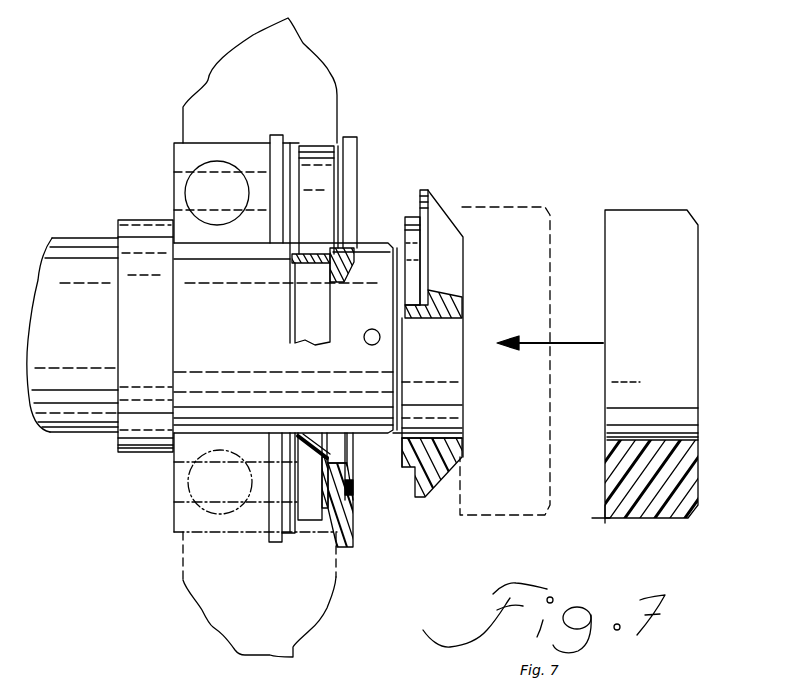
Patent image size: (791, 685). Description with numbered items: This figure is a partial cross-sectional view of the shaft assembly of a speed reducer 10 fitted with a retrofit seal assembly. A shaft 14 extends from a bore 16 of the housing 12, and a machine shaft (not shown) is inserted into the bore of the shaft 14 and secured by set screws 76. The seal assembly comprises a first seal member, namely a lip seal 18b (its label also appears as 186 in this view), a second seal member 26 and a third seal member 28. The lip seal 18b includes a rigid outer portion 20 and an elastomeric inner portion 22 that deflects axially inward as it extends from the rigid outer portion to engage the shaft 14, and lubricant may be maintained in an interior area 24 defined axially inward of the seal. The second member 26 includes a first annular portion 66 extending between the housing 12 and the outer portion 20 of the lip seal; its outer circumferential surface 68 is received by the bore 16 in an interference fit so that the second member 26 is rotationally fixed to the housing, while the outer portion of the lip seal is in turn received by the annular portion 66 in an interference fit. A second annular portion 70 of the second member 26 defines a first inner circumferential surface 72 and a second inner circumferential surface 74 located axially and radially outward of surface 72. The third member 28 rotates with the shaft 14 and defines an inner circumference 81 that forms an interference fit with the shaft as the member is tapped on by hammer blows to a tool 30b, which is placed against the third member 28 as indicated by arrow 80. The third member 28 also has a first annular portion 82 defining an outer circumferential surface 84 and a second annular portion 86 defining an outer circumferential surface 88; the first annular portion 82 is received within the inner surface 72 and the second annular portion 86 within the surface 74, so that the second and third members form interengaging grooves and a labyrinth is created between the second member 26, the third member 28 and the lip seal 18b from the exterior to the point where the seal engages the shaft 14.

The speed reducer 10 is at (148, 85).
The housing 12 is at (317, 58).
The shaft 14 is at (88, 443).
The bore 16 is at (261, 143).
The first seal member 18b is at (259, 594).
The rigid outer portion 20 is at (310, 528).
The elastomeric inner portion 22 is at (315, 452).
The interior area 24 is at (140, 512).
The second seal member 26 is at (352, 146).
The third seal member 28 is at (432, 195).
The tool 30b is at (497, 207).
The first annular portion 66 is at (292, 270).
The outer circumferential surface 68 is at (313, 142).
The second annular portion 70 is at (352, 527).
The first inner circumferential surface 72 is at (325, 450).
The second inner circumferential surface 74 is at (355, 482).
The set screws 76 is at (365, 345).
The arrow 80 is at (563, 340).
The inner circumference 81 is at (433, 437).
The first annular portion 82 is at (420, 318).
The outer circumferential surface 84 is at (410, 217).
The second annular portion 86 is at (445, 300).
The outer circumferential surface 88 is at (425, 187).
The housing wall 186 is at (293, 527).